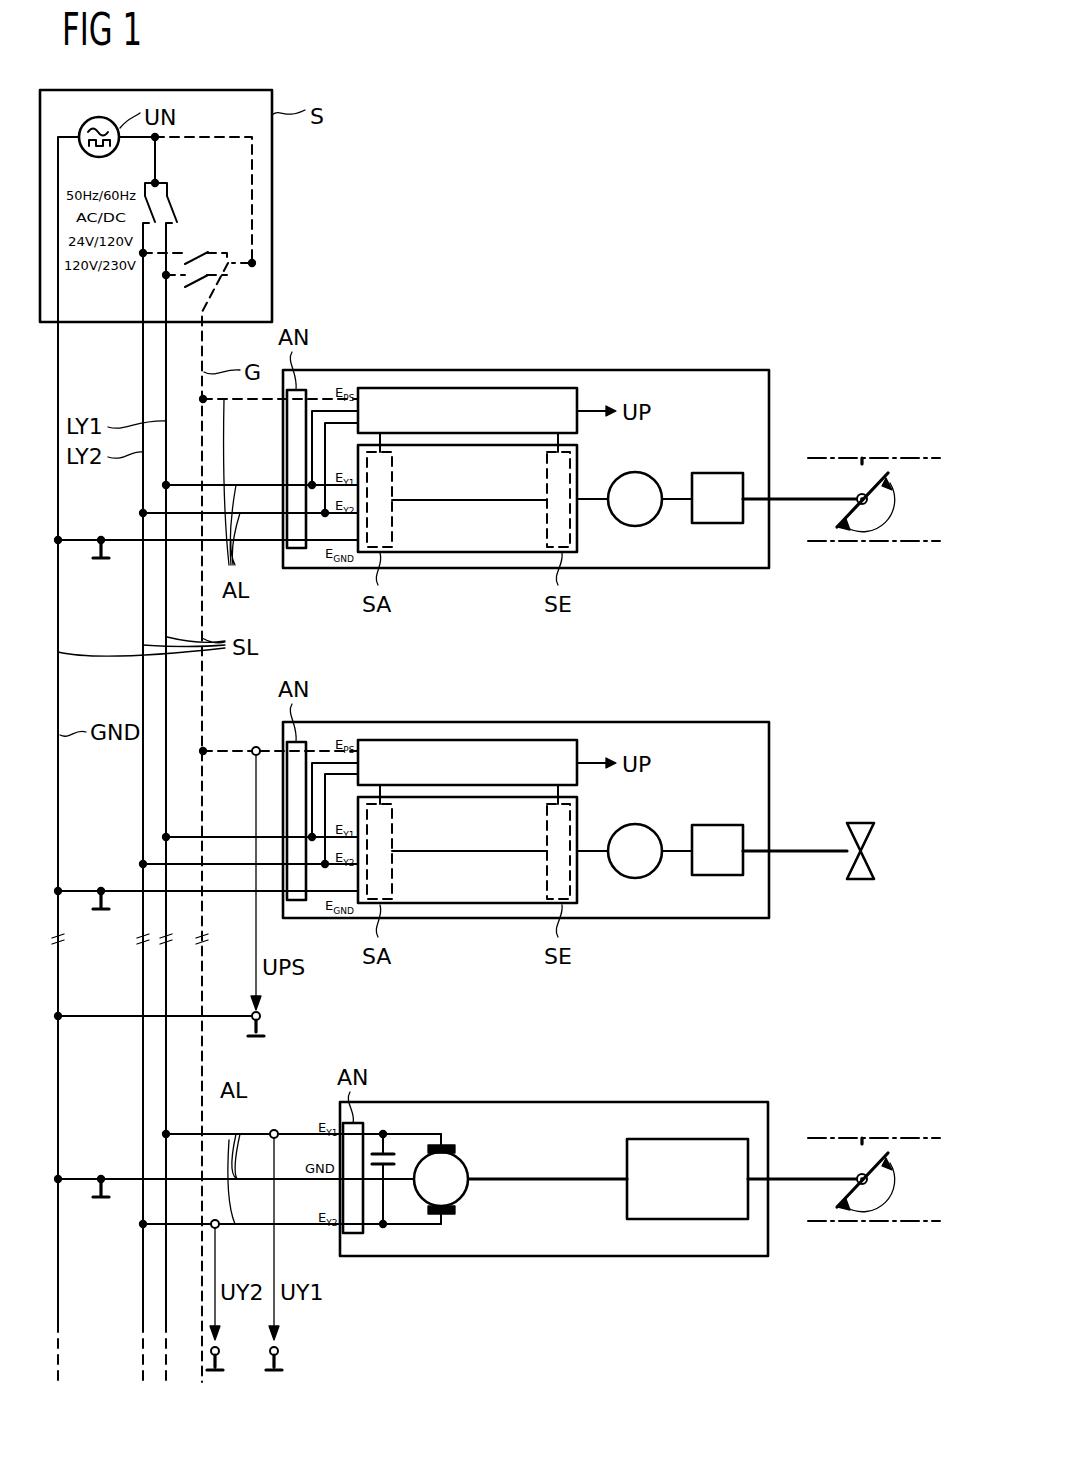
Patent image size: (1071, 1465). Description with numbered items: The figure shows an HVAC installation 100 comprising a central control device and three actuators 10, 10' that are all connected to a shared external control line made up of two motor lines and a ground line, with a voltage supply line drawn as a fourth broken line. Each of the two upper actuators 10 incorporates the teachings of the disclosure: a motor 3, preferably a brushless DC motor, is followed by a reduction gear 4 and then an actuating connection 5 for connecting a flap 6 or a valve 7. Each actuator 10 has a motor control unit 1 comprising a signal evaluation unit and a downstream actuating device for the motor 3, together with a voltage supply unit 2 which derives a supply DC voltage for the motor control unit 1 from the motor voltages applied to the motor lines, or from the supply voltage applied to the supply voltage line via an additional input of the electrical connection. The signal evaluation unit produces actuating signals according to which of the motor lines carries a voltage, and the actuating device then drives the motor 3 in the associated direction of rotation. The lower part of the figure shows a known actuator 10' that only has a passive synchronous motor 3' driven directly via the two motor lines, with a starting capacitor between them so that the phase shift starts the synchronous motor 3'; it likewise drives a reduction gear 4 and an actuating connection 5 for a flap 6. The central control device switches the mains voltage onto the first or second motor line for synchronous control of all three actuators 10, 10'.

The HVAC installation 100 is at (556, 189).
The actuator 10 is at (526, 610).
The actuator 10' is at (554, 1146).
The motor control unit 1 is at (478, 553).
The voltage supply unit 2 is at (464, 388).
The motor 3 is at (647, 651).
The passive synchronous motor 3' is at (465, 1177).
The reduction gear 4 is at (716, 473).
The actuating connection 5 is at (795, 505).
The flap 6 is at (848, 528).
The valve 7 is at (858, 880).